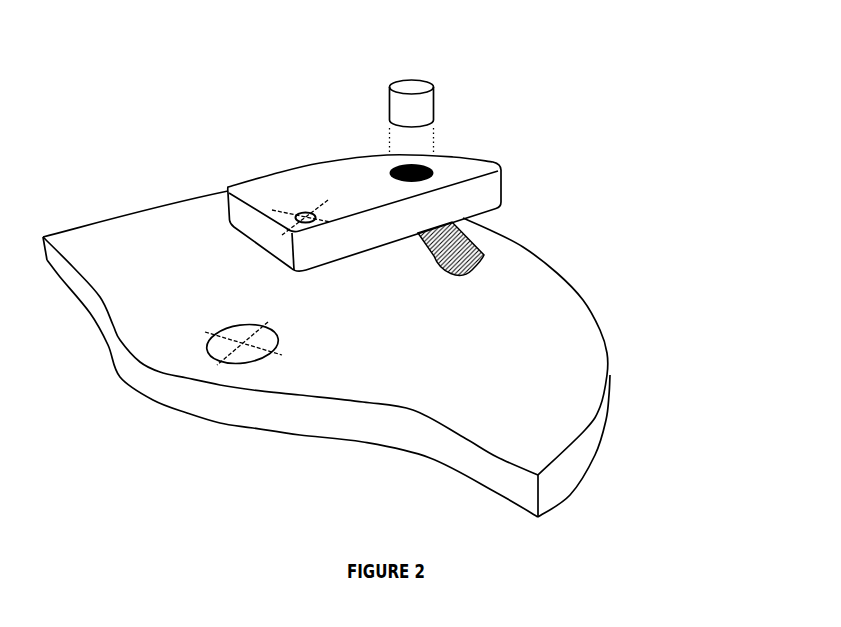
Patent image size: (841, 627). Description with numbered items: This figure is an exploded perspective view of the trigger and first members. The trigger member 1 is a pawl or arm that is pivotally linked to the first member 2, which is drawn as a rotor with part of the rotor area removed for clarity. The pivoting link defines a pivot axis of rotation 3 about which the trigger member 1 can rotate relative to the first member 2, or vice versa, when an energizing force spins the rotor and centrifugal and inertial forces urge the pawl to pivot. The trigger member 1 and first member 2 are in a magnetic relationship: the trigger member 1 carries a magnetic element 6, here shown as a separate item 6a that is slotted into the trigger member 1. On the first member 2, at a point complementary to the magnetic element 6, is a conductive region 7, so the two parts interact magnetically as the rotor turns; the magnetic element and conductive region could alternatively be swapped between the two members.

The trigger member 1 is at (477, 170).
The first member 2 is at (143, 335).
The pivot axis of rotation 3 is at (300, 213).
The magnetic element 6 is at (438, 165).
The separate magnetic element item 6a is at (387, 88).
The conductive region 7 is at (483, 253).